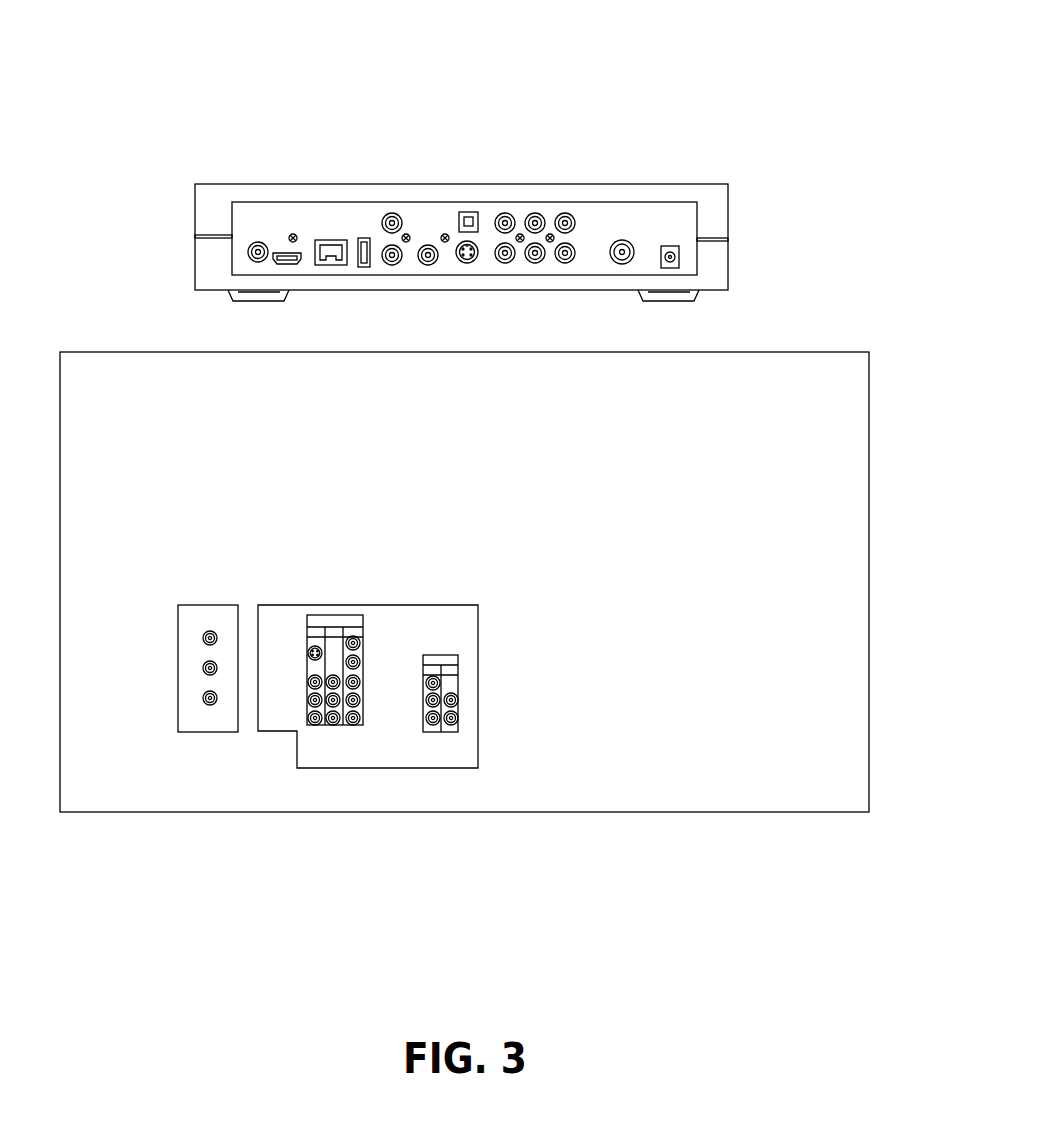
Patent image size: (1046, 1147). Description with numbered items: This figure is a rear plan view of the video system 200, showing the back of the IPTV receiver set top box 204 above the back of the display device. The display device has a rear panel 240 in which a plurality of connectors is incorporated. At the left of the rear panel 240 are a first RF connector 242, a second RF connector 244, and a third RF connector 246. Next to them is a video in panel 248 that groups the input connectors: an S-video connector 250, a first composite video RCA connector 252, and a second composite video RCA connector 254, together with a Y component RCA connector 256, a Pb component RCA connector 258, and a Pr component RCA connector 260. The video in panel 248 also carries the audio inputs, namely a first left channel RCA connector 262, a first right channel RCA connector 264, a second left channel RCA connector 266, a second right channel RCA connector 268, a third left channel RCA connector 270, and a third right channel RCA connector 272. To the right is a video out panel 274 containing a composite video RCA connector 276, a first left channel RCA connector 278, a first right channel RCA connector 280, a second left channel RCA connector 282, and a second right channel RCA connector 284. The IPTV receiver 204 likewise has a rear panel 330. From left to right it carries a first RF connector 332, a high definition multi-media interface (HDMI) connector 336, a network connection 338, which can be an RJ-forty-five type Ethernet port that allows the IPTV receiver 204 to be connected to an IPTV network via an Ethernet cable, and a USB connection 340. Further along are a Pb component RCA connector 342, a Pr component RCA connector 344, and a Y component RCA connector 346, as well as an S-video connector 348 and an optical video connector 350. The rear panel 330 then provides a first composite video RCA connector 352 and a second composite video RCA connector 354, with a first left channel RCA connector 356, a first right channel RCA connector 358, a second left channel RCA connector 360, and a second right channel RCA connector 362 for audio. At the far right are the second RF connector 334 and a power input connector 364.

The video system 200 is at (819, 132).
The IPTV receiver set top box 204 is at (186, 243).
The rear panel 240 is at (75, 793).
The first RF connector 242 is at (206, 635).
The second RF connector 244 is at (203, 668).
The third RF connector 246 is at (206, 701).
The video in panel 248 is at (352, 641).
The S-video connector 250 is at (313, 679).
The first composite video RCA connector 252 is at (312, 650).
The second composite video RCA connector 254 is at (332, 679).
The Y component RCA connector 256 is at (353, 660).
The Pb component RCA connector 258 is at (355, 680).
The Pr component RCA connector 260 is at (355, 698).
The first left channel RCA connector 262 is at (313, 702).
The first right channel RCA connector 264 is at (313, 720).
The second left channel RCA connector 266 is at (332, 703).
The second right channel RCA connector 268 is at (333, 721).
The third left channel RCA connector 270 is at (363, 727).
The third right channel RCA connector 272 is at (353, 721).
The video out panel 274 is at (458, 655).
The composite video RCA connector 276 is at (431, 680).
The first left channel RCA connector 278 is at (434, 697).
The first right channel RCA connector 280 is at (433, 720).
The second left channel RCA connector 282 is at (453, 698).
The second right channel RCA connector 284 is at (453, 720).
The rear panel 330 is at (207, 207).
The first RF connector 332 is at (252, 258).
The second RF connector 334 is at (633, 258).
The high definition multi-media interface (HDMI) connector 336 is at (283, 254).
The network connection 338 is at (325, 251).
The USB connection 340 is at (362, 241).
The Pb component RCA connector 342 is at (389, 219).
The Pr component RCA connector 344 is at (389, 261).
The Y component RCA connector 346 is at (427, 251).
The S-video connector 348 is at (467, 262).
The optical video connector 350 is at (466, 210).
The first composite video RCA connector 352 is at (507, 219).
The second composite video RCA connector 354 is at (507, 257).
The first left channel RCA connector 356 is at (537, 220).
The first right channel RCA connector 358 is at (567, 220).
The second left channel RCA connector 360 is at (537, 256).
The second right channel RCA connector 362 is at (567, 256).
The power input connector 364 is at (672, 255).